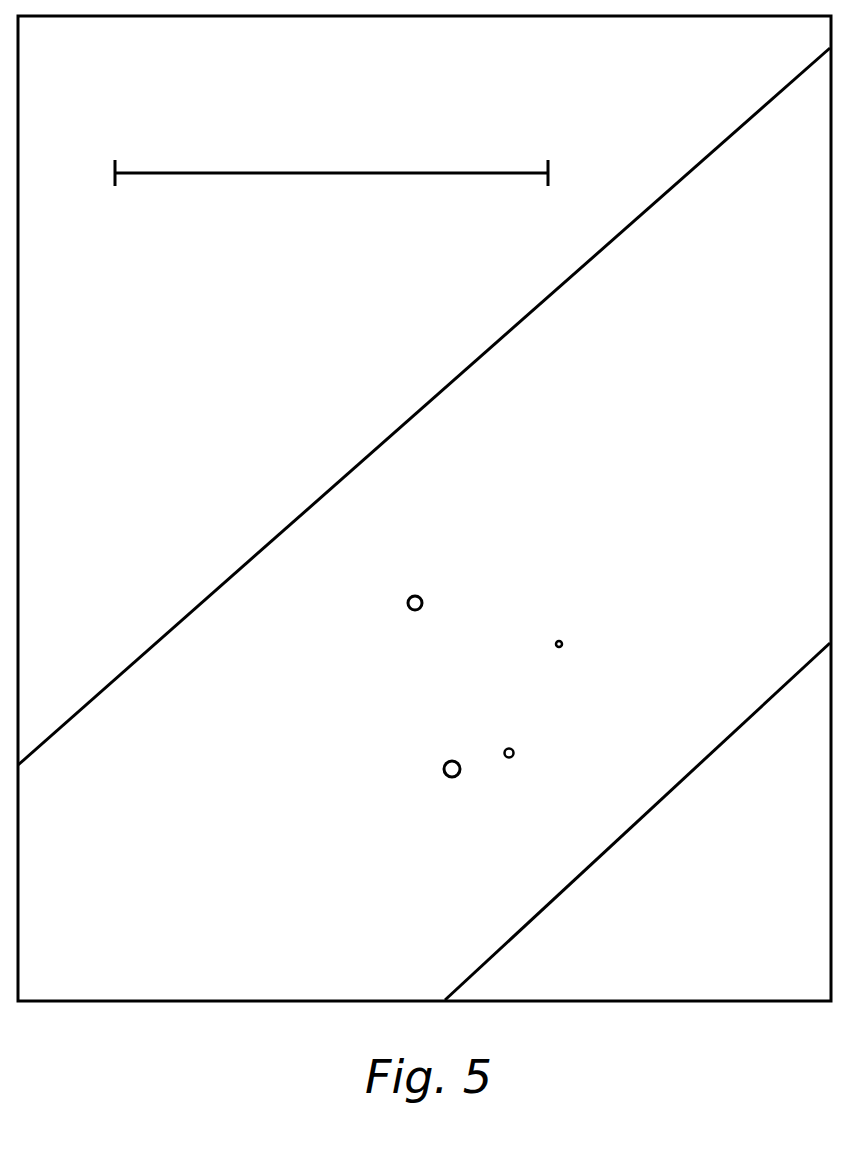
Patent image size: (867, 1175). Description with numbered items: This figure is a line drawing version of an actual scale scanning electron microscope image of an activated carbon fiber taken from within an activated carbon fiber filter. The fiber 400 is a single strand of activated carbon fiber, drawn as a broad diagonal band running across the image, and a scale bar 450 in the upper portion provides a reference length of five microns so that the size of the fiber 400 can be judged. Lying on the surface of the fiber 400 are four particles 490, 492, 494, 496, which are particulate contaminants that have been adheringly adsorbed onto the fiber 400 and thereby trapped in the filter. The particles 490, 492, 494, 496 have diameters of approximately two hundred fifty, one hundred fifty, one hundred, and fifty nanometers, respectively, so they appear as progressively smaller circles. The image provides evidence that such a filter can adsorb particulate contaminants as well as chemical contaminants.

The fiber 400 is at (423, 398).
The scale bar 450 is at (219, 229).
The particle 490 is at (442, 771).
The particle 492 is at (406, 605).
The particle 494 is at (512, 746).
The particle 496 is at (562, 641).